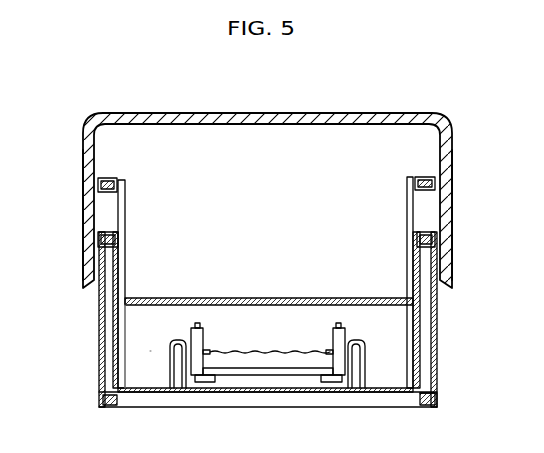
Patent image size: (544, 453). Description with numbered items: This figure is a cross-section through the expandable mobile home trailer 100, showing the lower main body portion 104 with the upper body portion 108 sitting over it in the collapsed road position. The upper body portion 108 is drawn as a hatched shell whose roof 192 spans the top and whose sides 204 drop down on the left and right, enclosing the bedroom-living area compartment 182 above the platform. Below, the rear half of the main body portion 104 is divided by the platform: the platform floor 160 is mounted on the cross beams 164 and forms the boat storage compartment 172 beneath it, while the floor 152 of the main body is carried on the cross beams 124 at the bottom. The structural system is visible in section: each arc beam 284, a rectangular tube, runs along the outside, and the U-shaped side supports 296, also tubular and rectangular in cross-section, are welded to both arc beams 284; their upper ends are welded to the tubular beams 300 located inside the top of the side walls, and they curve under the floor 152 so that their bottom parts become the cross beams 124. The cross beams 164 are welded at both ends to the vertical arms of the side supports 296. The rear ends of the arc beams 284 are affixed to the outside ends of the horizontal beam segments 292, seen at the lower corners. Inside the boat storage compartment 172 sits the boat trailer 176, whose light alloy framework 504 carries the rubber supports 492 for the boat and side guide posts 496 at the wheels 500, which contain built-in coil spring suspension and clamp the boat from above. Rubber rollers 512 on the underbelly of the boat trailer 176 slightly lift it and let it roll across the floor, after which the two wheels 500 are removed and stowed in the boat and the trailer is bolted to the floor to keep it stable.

The expandable mobile home trailer 100 is at (364, 99).
The main body portion 104 is at (443, 357).
The upper body portion 108 is at (454, 158).
The cross beams 124 is at (400, 407).
The floor 152 is at (165, 395).
The floor 160 is at (181, 298).
The cross beams 164 is at (168, 308).
The boat storage compartment 172 is at (148, 351).
The boat trailer 176 is at (256, 386).
The bedroom-living area compartment 182 is at (188, 140).
The roof 192 is at (280, 113).
The sides 204 is at (88, 153).
The arc beam 284 is at (99, 323).
The horizontal beam segment 292 is at (100, 403).
The U-shaped side supports 296 is at (122, 213).
The tubular beams 300 is at (108, 182).
The rubber supports 492 is at (200, 323).
The side guide posts 496 is at (208, 352).
The wheels 500 is at (172, 368).
The framework 504 is at (288, 376).
The rubber rollers 512 is at (212, 383).